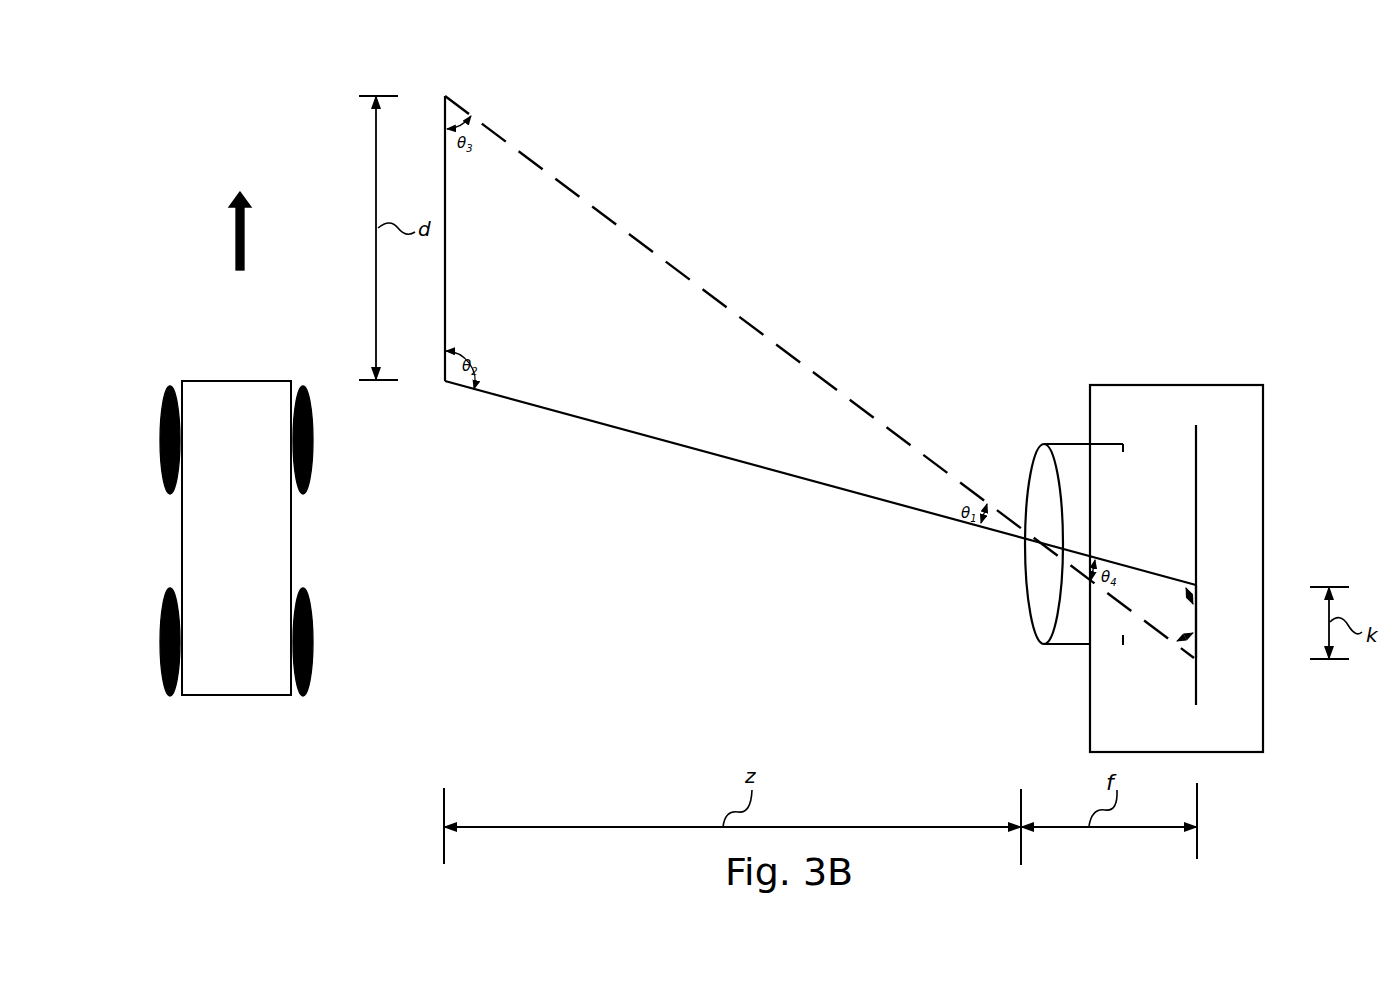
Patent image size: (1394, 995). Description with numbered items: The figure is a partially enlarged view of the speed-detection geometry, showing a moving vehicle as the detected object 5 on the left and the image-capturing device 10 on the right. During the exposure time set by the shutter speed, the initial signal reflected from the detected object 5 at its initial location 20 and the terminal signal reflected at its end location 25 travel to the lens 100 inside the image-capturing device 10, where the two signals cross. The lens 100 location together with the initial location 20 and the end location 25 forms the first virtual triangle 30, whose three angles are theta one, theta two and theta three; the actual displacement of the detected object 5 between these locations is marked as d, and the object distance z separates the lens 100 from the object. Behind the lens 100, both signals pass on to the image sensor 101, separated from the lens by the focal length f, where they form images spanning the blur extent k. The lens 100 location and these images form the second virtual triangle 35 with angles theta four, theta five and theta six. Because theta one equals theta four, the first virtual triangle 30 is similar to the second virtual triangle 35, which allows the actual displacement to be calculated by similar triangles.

The detected object 5 is at (258, 380).
The image-capturing device 10 is at (1149, 362).
The initial location 20 is at (379, 396).
The end location 25 is at (380, 87).
The first virtual triangle 30 is at (676, 342).
The second virtual triangle 35 is at (1158, 620).
The lens 100 is at (1048, 443).
The image sensor 101 is at (1197, 492).